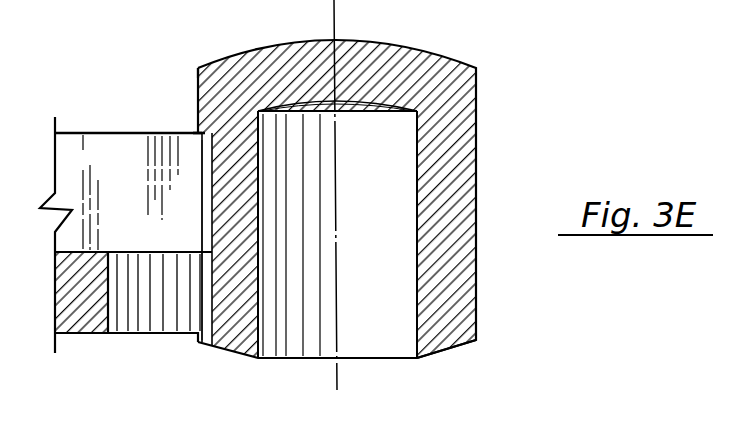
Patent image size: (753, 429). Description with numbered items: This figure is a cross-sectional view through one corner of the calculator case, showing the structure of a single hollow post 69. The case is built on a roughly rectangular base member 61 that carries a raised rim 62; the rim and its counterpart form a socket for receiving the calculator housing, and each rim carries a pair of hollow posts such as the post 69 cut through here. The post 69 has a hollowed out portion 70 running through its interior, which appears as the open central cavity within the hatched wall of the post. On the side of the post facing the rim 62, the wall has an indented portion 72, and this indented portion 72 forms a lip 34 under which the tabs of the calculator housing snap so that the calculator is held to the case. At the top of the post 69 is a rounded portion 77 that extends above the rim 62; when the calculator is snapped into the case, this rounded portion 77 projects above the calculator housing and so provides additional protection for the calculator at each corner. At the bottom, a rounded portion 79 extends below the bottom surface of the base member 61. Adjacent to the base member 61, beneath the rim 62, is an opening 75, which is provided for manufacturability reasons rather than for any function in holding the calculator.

The lip 34 is at (193, 147).
The base member 61 is at (77, 327).
The raised rim 62 is at (85, 150).
The hollow post 69 is at (460, 102).
The hollowed out portion 70 is at (396, 248).
The indented portion 72 is at (206, 198).
The opening 75 is at (168, 338).
The rounded portion 77 is at (197, 69).
The rounded portion 79 is at (425, 353).